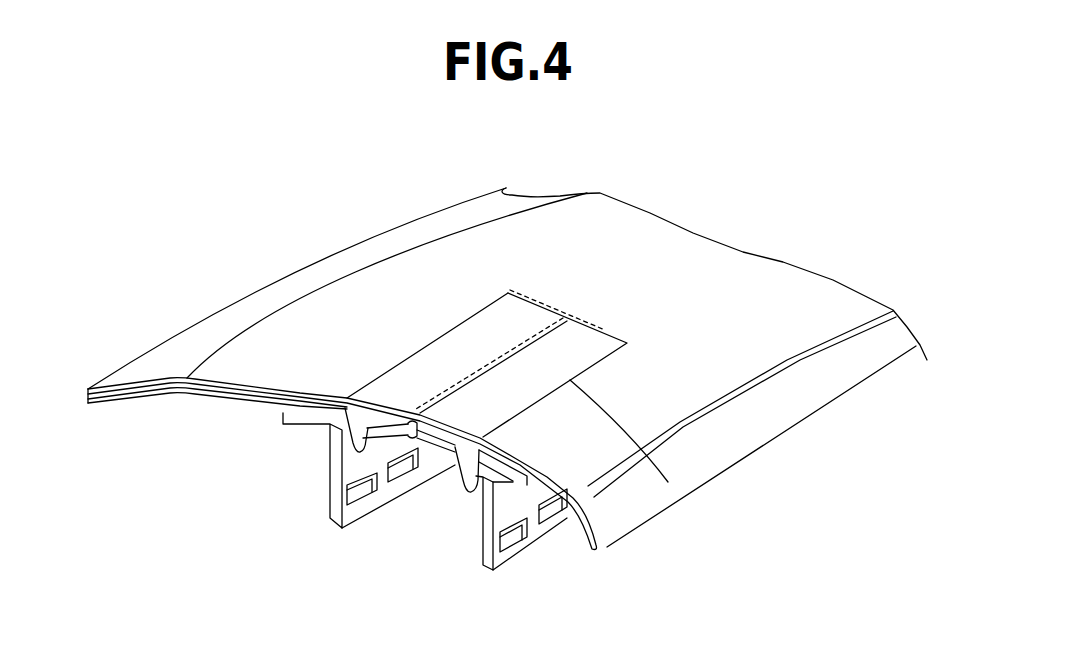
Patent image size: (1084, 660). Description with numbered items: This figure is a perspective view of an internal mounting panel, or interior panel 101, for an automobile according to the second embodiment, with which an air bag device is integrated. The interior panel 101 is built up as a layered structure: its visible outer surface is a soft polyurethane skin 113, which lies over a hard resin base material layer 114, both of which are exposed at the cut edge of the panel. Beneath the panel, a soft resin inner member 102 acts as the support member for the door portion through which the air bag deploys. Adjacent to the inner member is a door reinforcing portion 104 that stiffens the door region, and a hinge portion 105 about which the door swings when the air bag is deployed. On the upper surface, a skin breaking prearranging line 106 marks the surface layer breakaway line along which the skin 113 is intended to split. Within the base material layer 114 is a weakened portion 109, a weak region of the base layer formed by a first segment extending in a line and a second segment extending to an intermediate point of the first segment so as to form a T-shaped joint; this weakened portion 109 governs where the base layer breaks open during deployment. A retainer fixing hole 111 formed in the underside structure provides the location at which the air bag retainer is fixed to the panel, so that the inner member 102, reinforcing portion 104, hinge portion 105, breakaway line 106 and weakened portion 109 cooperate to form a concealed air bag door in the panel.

The interior panel 101 is at (612, 222).
The soft resin inner member 102 is at (516, 484).
The door reinforcing portion 104 is at (444, 448).
The hinge portion 105 is at (468, 496).
The skin breaking prearranging line 106 is at (604, 336).
The weakened portion of base material layer 109 is at (668, 482).
The retainer fixing hole 111 is at (332, 500).
The soft polyurethane skin 113 is at (166, 394).
The hard resin base material layer 114 is at (237, 405).